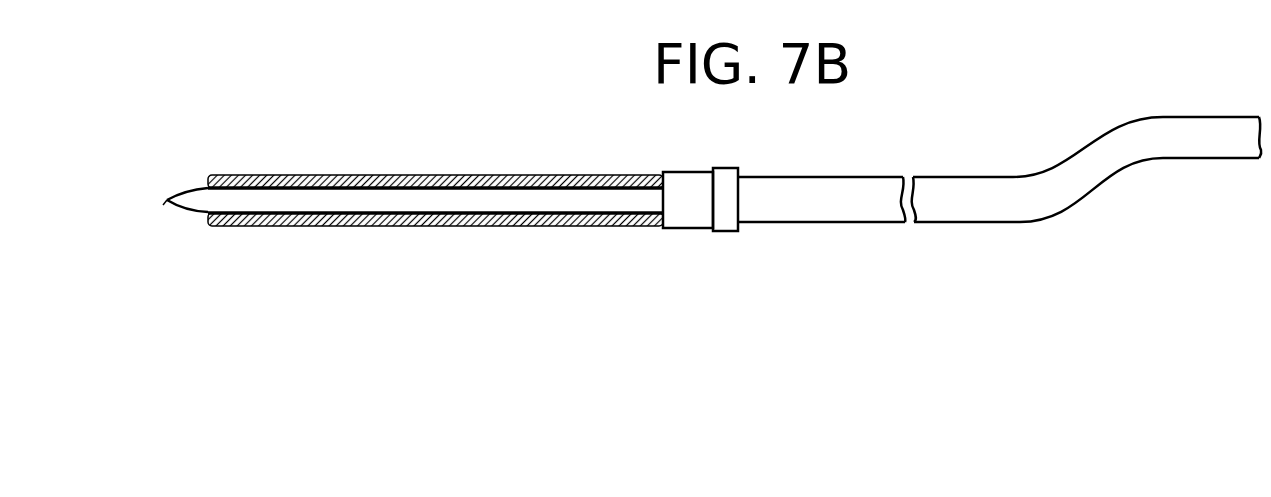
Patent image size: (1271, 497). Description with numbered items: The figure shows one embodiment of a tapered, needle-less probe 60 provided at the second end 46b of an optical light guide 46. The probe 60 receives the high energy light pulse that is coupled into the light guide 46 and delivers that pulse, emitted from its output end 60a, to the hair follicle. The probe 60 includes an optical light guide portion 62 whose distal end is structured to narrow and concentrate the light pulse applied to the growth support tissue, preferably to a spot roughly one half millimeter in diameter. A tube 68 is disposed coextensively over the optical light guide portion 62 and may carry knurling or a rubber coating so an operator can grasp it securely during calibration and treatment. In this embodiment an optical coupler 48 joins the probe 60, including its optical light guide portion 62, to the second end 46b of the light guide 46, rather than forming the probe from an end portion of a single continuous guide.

The tapered needle-less probe 60 is at (268, 297).
The output end 60a is at (166, 201).
The optical light guide portion 62 is at (472, 198).
The tube 68 is at (403, 224).
The optical coupler 48 is at (712, 238).
The second end of the optical light guide 46b is at (772, 213).
The optical light guide 46 is at (1193, 152).